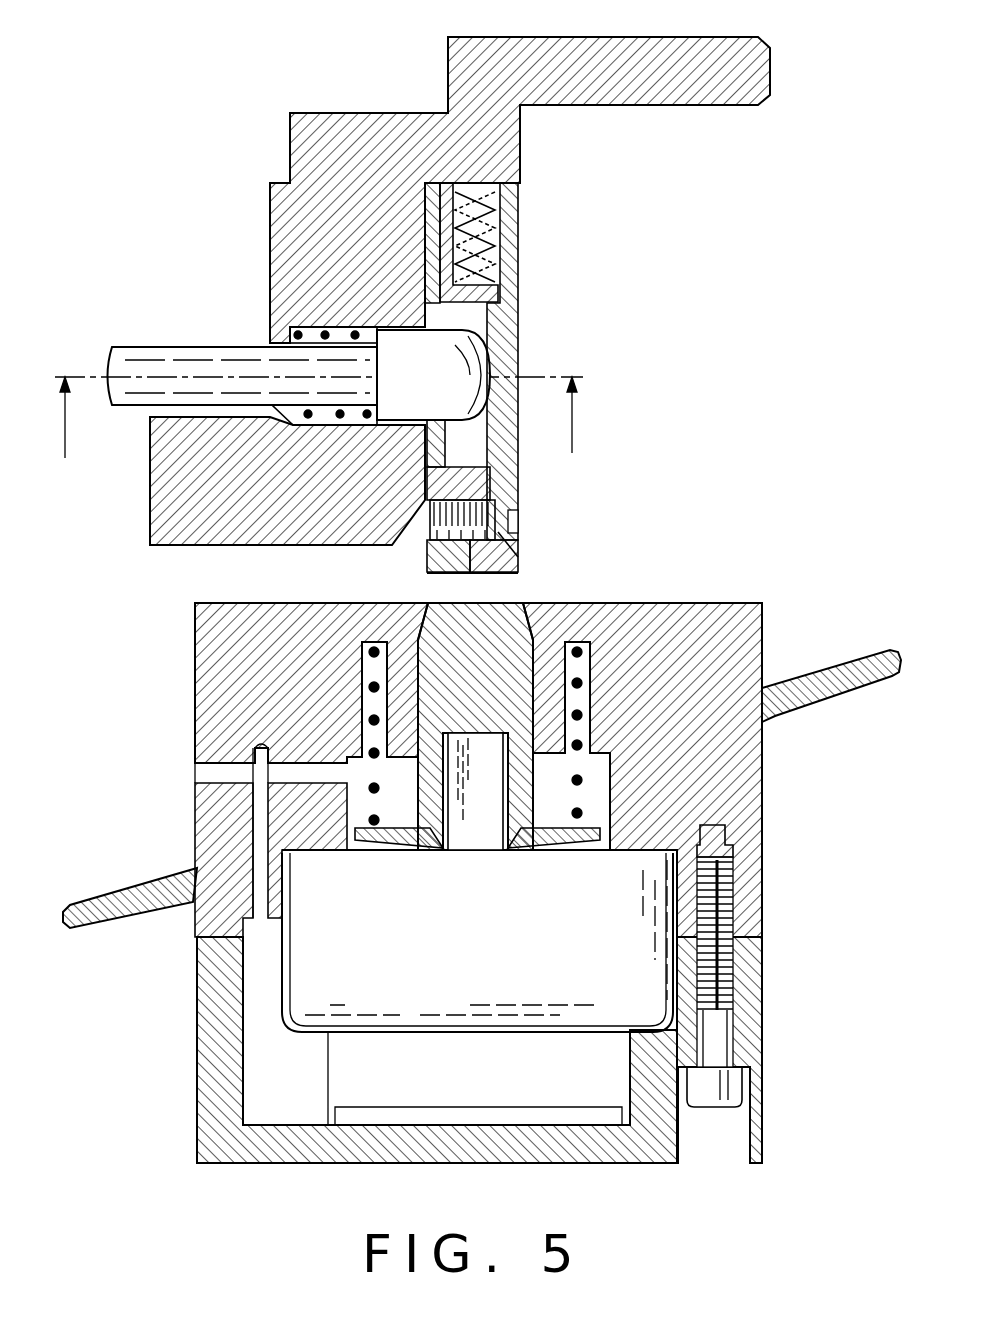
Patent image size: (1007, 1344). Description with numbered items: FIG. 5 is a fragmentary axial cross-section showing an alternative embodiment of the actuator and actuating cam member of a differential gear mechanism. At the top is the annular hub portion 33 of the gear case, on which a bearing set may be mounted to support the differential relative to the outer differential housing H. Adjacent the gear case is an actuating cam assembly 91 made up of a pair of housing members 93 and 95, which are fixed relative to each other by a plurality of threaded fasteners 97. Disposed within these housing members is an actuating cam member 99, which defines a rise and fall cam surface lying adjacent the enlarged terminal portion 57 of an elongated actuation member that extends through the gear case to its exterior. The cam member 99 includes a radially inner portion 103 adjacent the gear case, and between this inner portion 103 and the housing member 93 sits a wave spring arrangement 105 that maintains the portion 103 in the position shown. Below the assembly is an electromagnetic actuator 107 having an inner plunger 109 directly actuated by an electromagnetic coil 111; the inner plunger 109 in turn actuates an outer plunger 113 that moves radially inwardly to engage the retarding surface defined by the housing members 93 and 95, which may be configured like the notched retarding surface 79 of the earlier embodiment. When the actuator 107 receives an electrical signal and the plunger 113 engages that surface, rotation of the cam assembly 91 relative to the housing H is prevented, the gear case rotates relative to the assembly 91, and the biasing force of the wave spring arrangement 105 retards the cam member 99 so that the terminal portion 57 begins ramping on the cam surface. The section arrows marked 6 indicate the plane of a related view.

The annular hub portion 33 is at (638, 85).
The wave spring arrangement 105 is at (470, 185).
The radially inner portion 103 is at (432, 250).
The actuating cam assembly 91 is at (486, 367).
The actuating cam member 99 is at (520, 330).
The terminal portion 57 is at (417, 397).
The housing member 95 is at (440, 557).
The threaded fastener 97 is at (518, 540).
The housing member 93 is at (503, 563).
The retarding surface 79 is at (497, 577).
The section line 6 is at (319, 437).
The electromagnetic actuator 107 is at (181, 737).
The outer plunger 113 is at (475, 726).
The inner plunger 109 is at (470, 822).
The electromagnetic coil 111 is at (477, 942).
The outer differential housing H is at (823, 674).